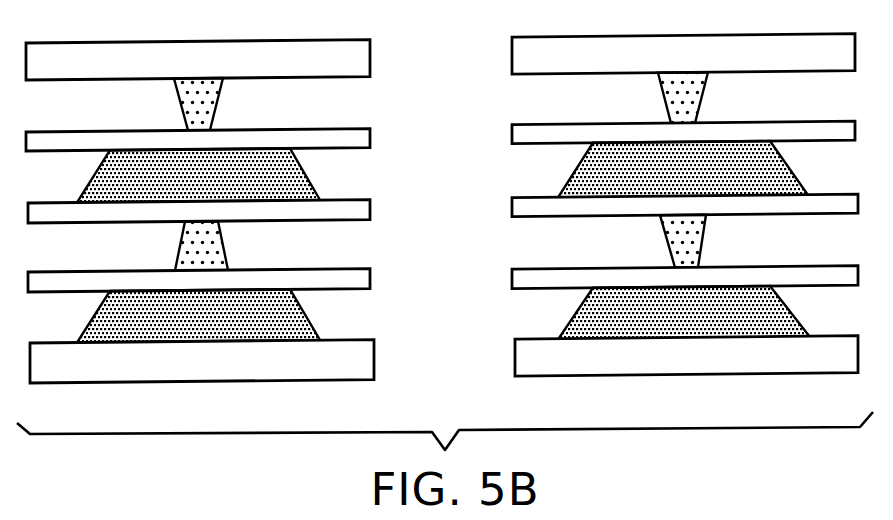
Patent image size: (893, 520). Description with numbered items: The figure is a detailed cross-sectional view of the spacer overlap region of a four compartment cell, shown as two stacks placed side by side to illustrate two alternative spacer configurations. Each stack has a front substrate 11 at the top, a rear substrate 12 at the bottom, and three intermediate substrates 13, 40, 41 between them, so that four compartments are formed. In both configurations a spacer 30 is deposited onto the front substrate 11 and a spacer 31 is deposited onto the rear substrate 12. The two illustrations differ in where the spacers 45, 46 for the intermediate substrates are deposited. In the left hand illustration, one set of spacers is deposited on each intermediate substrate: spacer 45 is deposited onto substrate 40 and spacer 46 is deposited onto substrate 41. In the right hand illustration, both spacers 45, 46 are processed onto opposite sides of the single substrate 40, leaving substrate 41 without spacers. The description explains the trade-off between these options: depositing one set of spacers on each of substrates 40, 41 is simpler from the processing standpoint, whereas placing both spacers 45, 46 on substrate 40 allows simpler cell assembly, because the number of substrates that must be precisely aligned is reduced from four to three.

The front substrate 11 is at (370, 57).
The rear substrate 12 is at (515, 357).
The intermediate substrate 13 is at (370, 137).
The spacer 30 is at (222, 102).
The spacer 31 is at (583, 306).
The intermediate substrate 40 is at (370, 209).
The intermediate substrate 41 is at (370, 280).
The spacer 45 is at (302, 168).
The spacer 46 is at (668, 238).